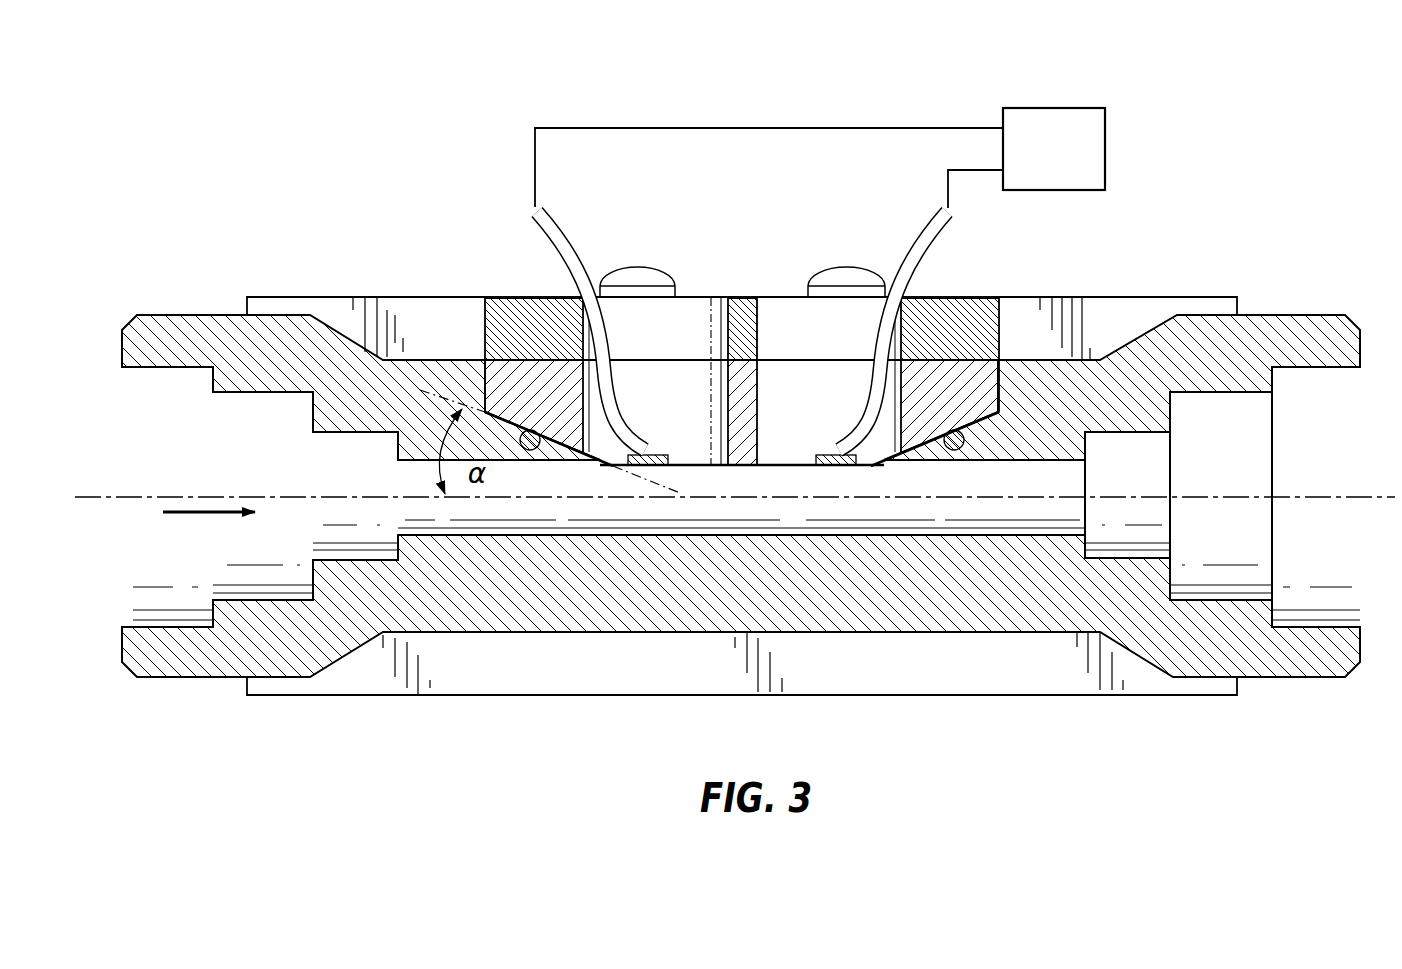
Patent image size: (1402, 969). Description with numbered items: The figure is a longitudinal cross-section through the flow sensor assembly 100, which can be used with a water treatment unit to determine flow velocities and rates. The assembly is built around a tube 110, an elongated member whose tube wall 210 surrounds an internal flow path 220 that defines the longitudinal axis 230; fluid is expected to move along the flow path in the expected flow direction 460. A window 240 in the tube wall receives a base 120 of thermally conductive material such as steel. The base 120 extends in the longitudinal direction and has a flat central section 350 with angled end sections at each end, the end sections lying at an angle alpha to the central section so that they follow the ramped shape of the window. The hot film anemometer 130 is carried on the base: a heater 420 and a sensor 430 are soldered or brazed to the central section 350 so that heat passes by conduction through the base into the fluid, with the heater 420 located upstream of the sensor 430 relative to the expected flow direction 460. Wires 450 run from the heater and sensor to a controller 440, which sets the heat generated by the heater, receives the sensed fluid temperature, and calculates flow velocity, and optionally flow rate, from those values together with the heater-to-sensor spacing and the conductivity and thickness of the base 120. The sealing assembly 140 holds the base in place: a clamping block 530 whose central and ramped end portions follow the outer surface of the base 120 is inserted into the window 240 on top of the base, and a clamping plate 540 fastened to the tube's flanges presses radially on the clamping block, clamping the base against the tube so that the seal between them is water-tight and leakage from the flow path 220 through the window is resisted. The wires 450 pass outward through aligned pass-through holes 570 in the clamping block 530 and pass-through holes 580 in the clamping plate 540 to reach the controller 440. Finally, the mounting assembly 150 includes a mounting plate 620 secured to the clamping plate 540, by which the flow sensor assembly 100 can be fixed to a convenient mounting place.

The flow sensor assembly 100 is at (375, 157).
The tube 110 is at (185, 303).
The base 120 is at (790, 478).
The hot film anemometer 130 is at (1150, 117).
The sealing assembly 140 is at (808, 258).
The mounting assembly 150 is at (337, 292).
The tube wall 210 is at (580, 603).
The flow path 220 is at (545, 535).
The longitudinal axis 230 is at (1200, 496).
The window 240 is at (884, 446).
The central section 350 is at (763, 466).
The heater 420 is at (647, 452).
The sensor 430 is at (830, 452).
The controller 440 is at (1033, 163).
The wires 450 is at (565, 228).
The expected flow direction 460 is at (198, 517).
The clamping block 530 is at (1000, 387).
The clamping plate 540 is at (945, 296).
The pass-through holes 570 is at (727, 430).
The pass-through holes 580 is at (758, 438).
The mounting plate 620 is at (1140, 297).